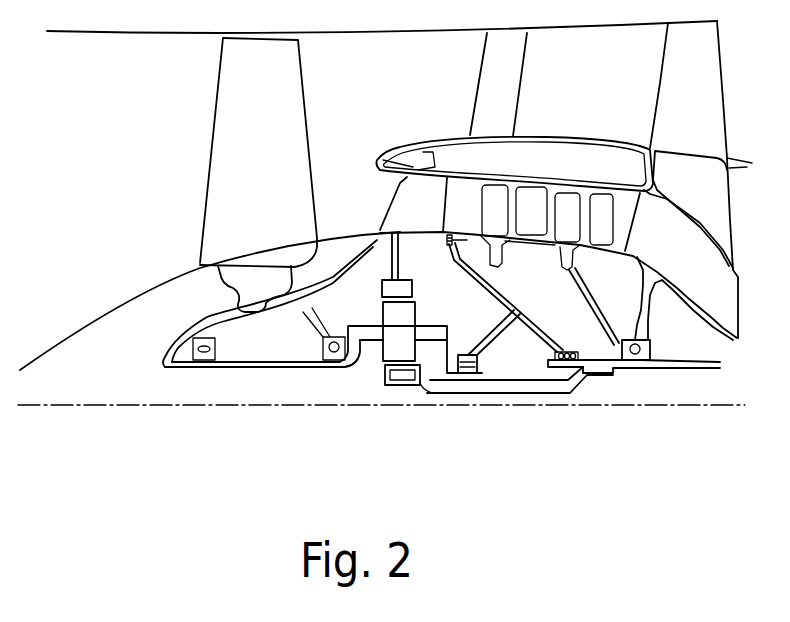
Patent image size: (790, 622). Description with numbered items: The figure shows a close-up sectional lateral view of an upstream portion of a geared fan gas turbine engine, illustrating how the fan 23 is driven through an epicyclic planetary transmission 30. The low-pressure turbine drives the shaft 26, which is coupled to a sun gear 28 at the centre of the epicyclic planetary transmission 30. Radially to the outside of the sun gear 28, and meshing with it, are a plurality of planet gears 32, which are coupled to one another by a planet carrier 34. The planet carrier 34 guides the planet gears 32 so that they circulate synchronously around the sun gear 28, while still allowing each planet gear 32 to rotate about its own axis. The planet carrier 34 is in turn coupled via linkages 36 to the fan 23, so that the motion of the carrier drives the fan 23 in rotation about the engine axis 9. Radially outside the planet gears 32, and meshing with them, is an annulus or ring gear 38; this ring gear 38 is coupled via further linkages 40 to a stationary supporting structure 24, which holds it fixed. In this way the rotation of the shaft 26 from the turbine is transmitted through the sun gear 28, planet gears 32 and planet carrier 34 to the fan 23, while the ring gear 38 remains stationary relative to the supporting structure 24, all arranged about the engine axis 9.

The engine axis 9 is at (192, 405).
The fan 23 is at (228, 154).
The stationary supporting structure 24 is at (407, 201).
The shaft 26 is at (537, 383).
The sun gear 28 is at (403, 380).
The epicyclic planetary transmission 30 is at (356, 383).
The planet gears 32 is at (387, 370).
The planet carrier 34 is at (440, 370).
The linkages 36 is at (360, 347).
The ring gear 38 is at (383, 290).
The linkages 40 is at (400, 272).